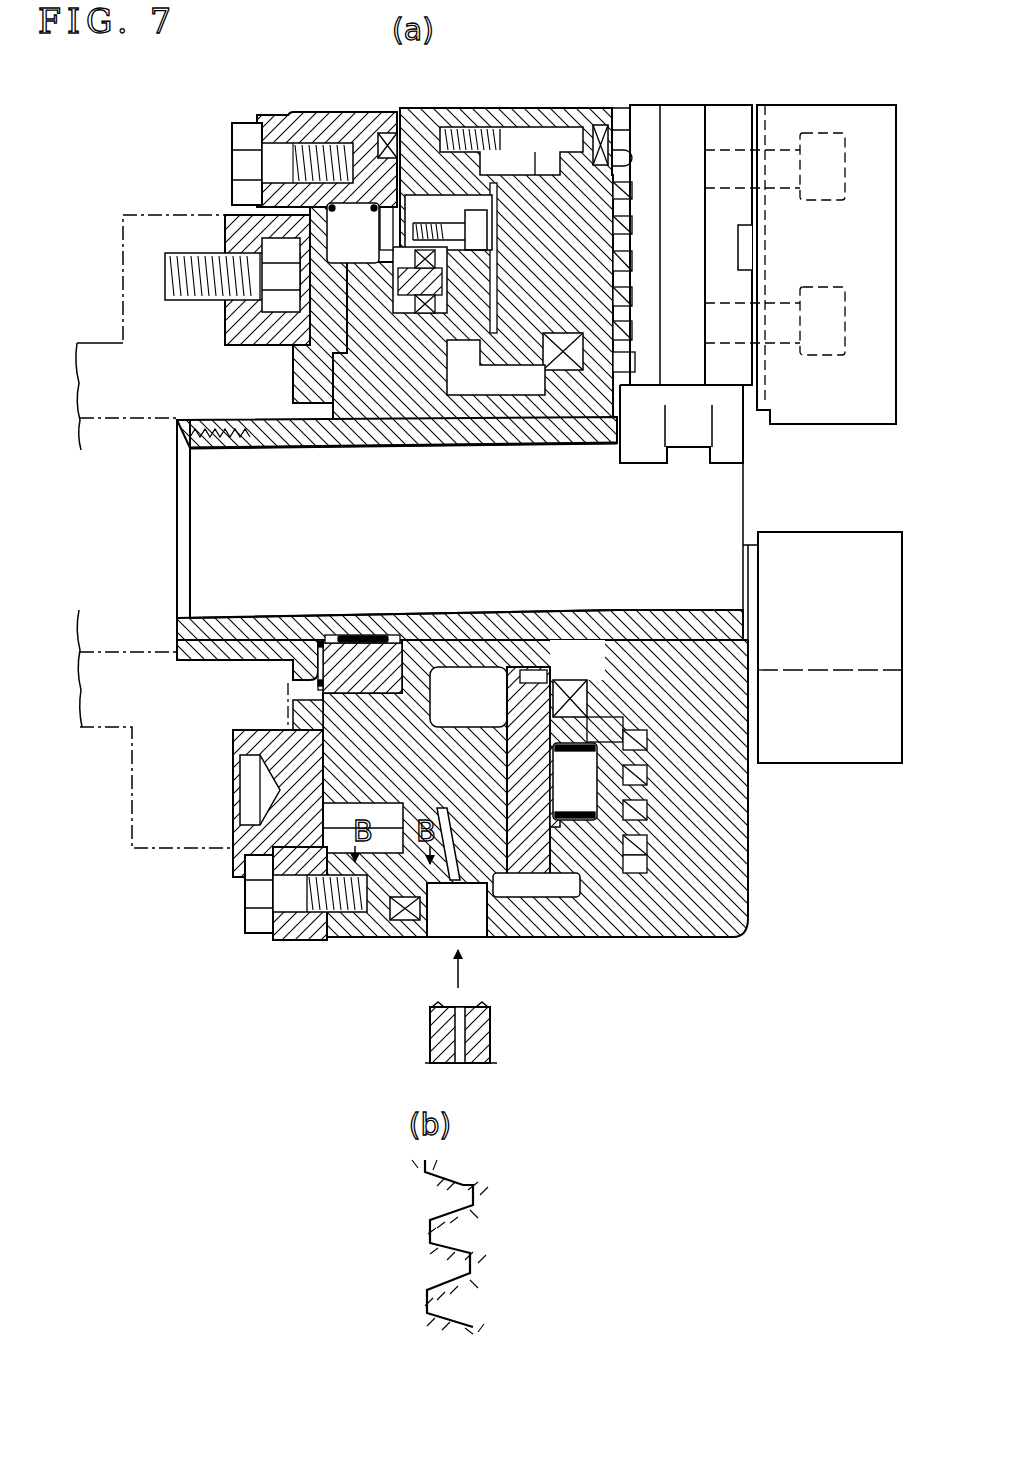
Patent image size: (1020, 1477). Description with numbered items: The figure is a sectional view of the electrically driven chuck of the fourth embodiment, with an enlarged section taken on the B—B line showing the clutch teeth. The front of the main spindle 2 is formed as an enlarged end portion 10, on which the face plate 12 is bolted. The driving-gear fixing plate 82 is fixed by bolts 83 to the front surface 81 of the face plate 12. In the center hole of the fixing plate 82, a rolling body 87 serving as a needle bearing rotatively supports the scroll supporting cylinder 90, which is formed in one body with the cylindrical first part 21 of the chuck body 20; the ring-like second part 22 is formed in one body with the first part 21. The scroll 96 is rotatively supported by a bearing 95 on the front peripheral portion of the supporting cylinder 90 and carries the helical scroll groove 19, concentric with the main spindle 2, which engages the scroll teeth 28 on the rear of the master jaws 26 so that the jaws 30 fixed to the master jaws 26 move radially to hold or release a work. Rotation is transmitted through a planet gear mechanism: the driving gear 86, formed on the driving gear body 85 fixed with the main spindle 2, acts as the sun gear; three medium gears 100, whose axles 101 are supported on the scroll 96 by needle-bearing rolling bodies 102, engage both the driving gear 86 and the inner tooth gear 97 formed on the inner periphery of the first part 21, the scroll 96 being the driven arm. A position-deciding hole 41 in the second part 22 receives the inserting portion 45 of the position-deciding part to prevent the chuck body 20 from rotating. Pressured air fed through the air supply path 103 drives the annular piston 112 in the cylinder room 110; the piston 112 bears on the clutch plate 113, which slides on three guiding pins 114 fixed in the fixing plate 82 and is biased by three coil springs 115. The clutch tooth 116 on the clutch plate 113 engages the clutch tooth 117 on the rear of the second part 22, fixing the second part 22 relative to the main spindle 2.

The main spindle 2 is at (140, 762).
The main spindle end portion 10 is at (125, 243).
The face plate 12 is at (232, 215).
The scroll groove 19 is at (620, 243).
The chuck body 20 is at (456, 103).
The first part 21 is at (730, 718).
The second part 22 is at (427, 112).
The master jaws 26 is at (677, 118).
The scroll teeth 28 is at (632, 158).
The jaws 30 is at (842, 120).
The position-deciding hole 41 is at (443, 920).
The inserting portion 45 is at (480, 1035).
The front surface 81 is at (315, 213).
The driving-gear fixing plate 82 is at (356, 112).
The bolts 83 is at (232, 130).
The driving gear body 85 is at (440, 440).
The driving gear 86 is at (513, 372).
The rolling body 87 is at (343, 433).
The scroll supporting cylinder 90 is at (523, 440).
The bearing 95 is at (570, 683).
The scroll 96 is at (593, 860).
The inner tooth gear 97 is at (505, 140).
The medium gears 100 is at (513, 703).
The axle 101 is at (627, 792).
The rolling body 102 is at (590, 707).
The air supply path 103 is at (453, 847).
The cylinder room 110 is at (413, 730).
The annular piston 112 is at (383, 728).
The clutch plate 113 is at (397, 197).
The guiding pins 114 is at (350, 810).
The coil springs 115 is at (350, 243).
The clutch tooth 116 is at (397, 208).
The clutch tooth 117 is at (503, 1273).